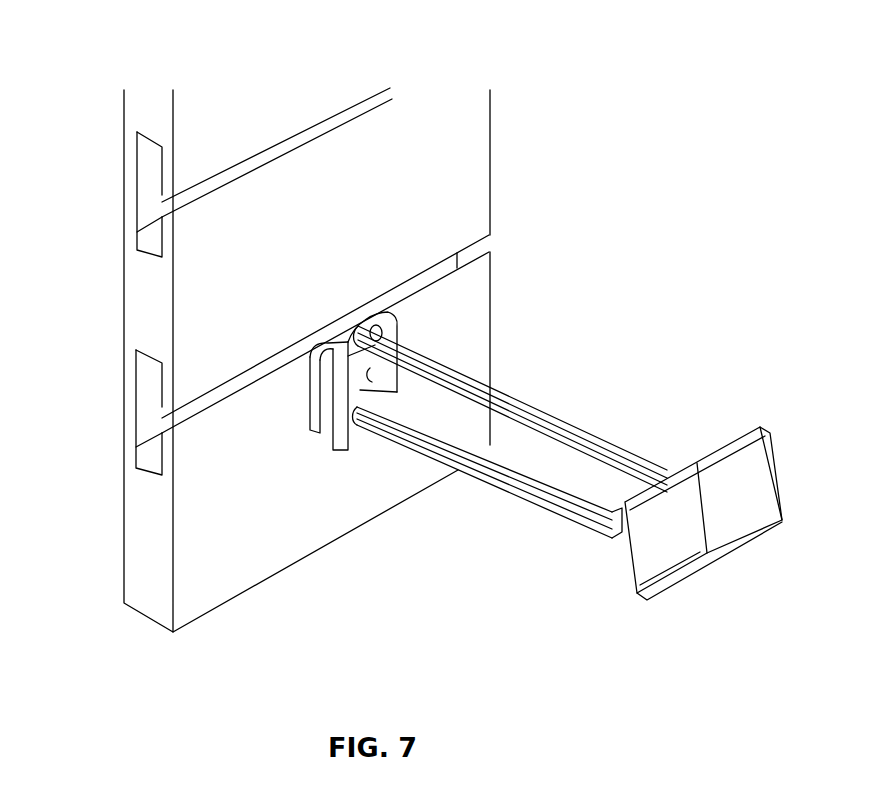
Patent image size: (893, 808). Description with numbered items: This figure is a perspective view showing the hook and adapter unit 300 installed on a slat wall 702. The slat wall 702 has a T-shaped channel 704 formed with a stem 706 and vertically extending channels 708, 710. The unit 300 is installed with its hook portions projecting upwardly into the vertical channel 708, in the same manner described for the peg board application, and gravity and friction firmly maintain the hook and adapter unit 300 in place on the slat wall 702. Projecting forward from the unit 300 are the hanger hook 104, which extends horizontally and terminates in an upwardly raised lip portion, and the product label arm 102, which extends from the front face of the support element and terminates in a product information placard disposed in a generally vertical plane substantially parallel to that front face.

The slat wall 702 is at (503, 177).
The T-shaped channel 704 is at (148, 408).
The stem 706 is at (165, 415).
The vertically extending channel 708 is at (145, 157).
The vertically extending channel 710 is at (145, 231).
The hook and adapter unit 300 is at (546, 455).
The product label arm 102 is at (533, 413).
The hanger hook 104 is at (508, 490).